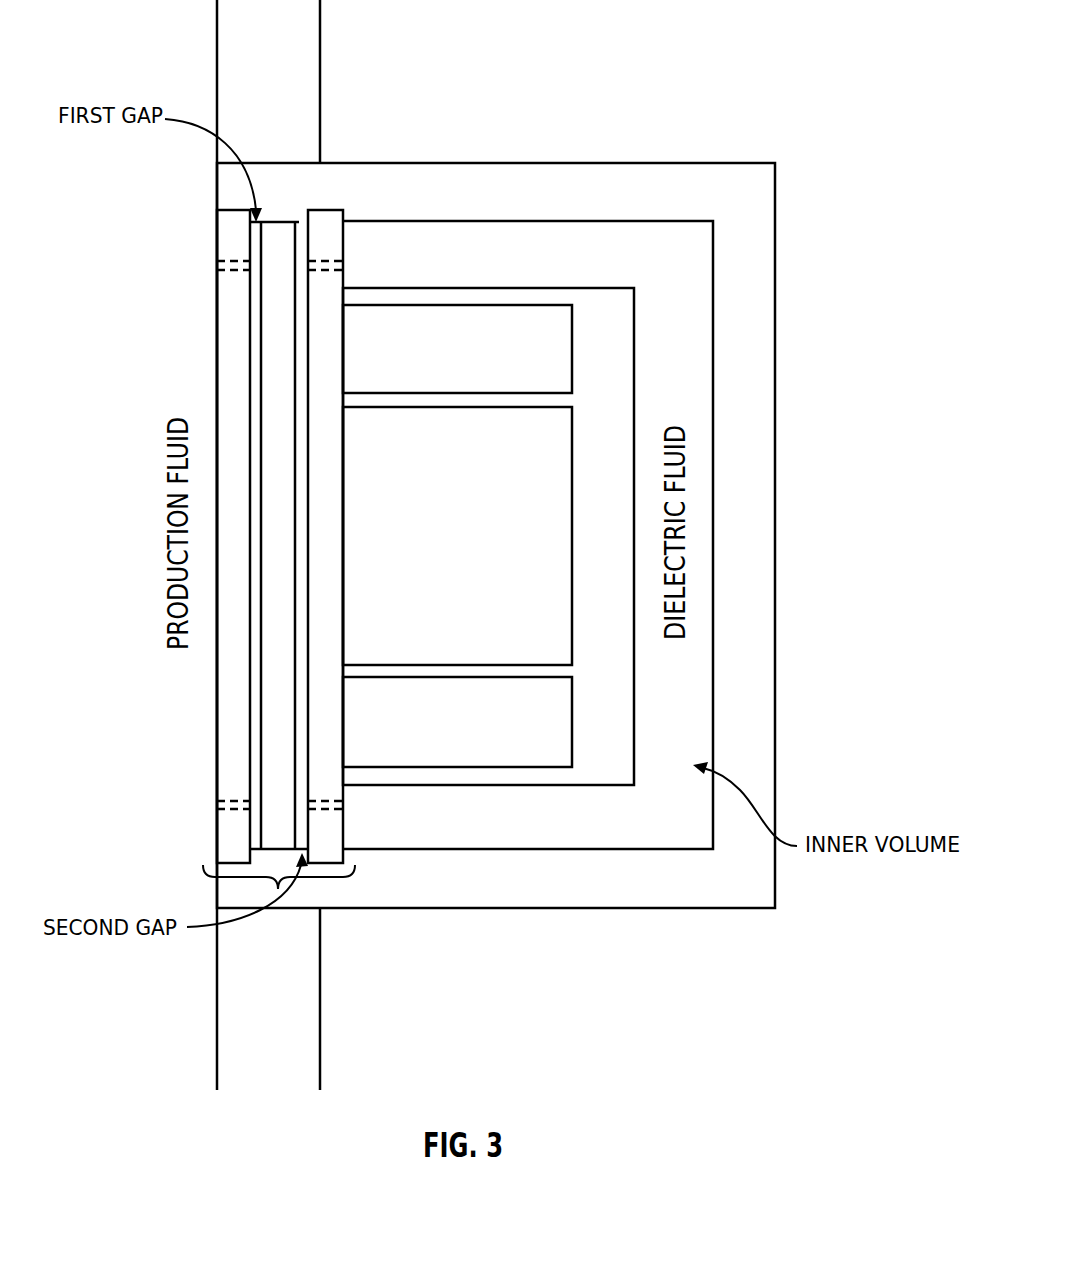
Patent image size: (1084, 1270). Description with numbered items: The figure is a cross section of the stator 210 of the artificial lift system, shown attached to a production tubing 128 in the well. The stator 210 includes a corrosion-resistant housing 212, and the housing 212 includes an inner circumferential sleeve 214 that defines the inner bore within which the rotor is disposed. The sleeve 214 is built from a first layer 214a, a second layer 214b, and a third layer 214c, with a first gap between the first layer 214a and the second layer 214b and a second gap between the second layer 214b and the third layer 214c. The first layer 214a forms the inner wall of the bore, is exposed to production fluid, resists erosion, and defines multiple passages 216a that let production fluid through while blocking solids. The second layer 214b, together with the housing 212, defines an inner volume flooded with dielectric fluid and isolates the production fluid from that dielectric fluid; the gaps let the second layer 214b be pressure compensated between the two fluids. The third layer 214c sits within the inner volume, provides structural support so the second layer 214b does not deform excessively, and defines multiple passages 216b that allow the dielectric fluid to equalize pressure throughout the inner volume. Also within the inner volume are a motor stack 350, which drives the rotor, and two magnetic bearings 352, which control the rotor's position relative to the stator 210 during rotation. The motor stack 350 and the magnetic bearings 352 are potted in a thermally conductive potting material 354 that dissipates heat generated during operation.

The production tubing 128 is at (320, 85).
The stator 210 is at (834, 295).
The housing 212 is at (775, 233).
The inner circumferential sleeve 214 is at (278, 889).
The first layer 214a is at (217, 290).
The second layer 214b is at (276, 222).
The third layer 214c is at (343, 240).
The passage 216a is at (217, 263).
The passage 216b is at (343, 265).
The motor stack 350 is at (439, 551).
The magnetic bearing 352 is at (439, 365).
The thermally conductive potting material 354 is at (584, 551).